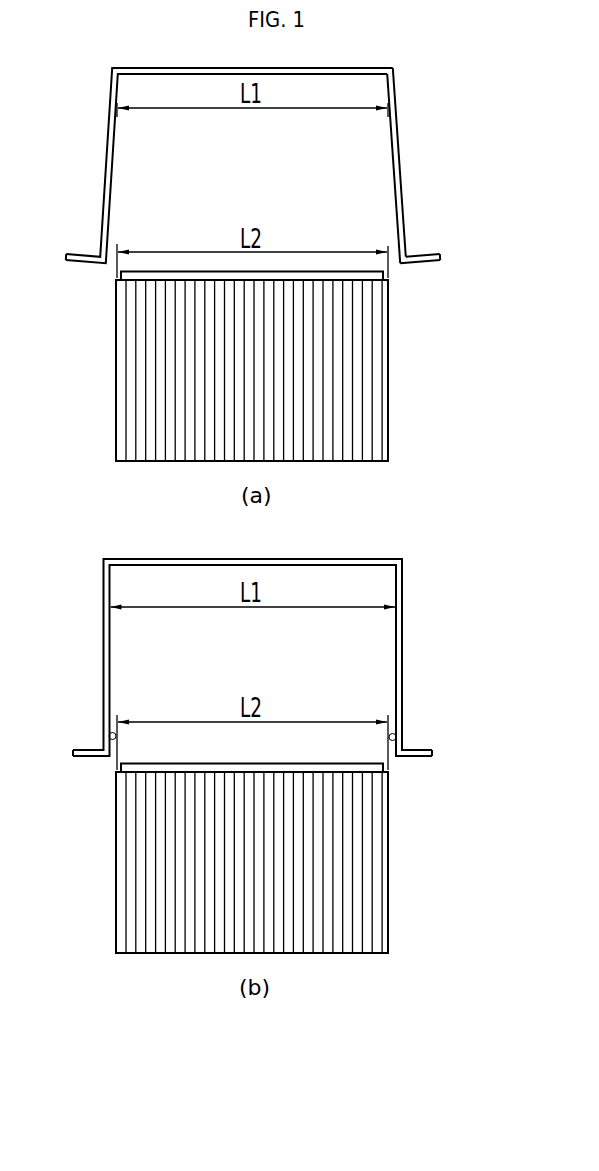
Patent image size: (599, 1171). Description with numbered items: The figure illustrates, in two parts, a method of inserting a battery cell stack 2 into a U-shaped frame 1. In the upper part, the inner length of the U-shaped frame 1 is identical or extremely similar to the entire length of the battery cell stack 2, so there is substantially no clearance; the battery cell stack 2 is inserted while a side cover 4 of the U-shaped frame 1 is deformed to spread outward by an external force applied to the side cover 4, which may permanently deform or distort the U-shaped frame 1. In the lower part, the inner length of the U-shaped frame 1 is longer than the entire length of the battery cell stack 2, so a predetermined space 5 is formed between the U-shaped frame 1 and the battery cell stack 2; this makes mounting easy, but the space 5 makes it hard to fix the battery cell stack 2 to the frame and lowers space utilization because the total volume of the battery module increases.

The U-shaped frame 1 is at (428, 117).
The battery cell stack 2 is at (403, 357).
The side cover 4 is at (405, 170).
The predetermined space 5 is at (109, 730).